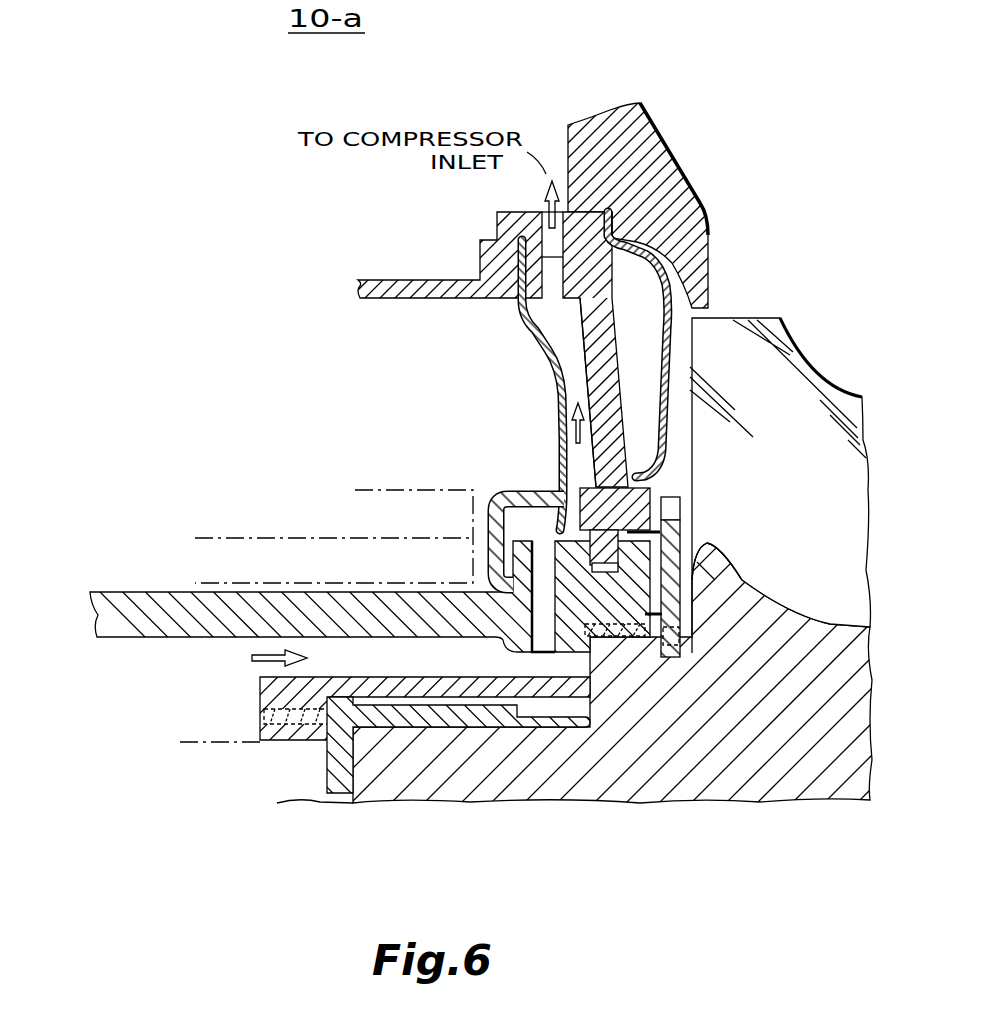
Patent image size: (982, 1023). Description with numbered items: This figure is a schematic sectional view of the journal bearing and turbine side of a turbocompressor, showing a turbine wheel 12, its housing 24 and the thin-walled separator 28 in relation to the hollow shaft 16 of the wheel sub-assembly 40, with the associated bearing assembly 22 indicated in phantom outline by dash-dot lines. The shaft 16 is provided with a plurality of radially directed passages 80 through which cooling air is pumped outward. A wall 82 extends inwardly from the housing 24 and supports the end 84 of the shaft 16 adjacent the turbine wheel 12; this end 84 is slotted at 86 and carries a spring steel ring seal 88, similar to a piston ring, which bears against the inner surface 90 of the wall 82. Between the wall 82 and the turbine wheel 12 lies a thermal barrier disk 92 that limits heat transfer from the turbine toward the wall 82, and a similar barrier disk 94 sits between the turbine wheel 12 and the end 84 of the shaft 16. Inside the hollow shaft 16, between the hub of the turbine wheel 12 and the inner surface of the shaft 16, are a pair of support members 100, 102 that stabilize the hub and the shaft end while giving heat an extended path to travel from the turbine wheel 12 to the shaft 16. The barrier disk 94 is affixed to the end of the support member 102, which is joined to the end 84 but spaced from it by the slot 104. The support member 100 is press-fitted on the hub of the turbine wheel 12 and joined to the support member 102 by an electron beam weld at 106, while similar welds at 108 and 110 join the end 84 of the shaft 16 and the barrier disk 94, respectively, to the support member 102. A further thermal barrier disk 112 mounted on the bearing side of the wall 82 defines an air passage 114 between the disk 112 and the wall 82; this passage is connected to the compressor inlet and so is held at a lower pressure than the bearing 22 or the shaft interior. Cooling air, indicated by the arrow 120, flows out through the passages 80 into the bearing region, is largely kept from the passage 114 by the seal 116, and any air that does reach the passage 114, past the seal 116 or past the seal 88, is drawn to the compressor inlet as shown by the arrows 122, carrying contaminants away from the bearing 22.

The turbine wheel 12 is at (785, 318).
The hollow shaft 16 is at (118, 590).
The bearing assembly 22 is at (357, 490).
The turbine housing 24 is at (663, 123).
The separator 28 is at (410, 280).
The sub-assembly 40 is at (735, 800).
The radially directed passages 80 is at (497, 497).
The wall 82 is at (612, 345).
The end of the shaft 84 is at (664, 614).
The slot 86 is at (700, 574).
The spring steel ring seal 88 is at (680, 553).
The inner surface 90 is at (688, 514).
The thermal barrier disk 92 is at (698, 296).
The barrier disk 94 is at (707, 557).
The support member 100 is at (328, 764).
The support member 102 is at (258, 684).
The slot 104 is at (672, 622).
The electron beam weld 106 is at (268, 714).
The weld 108 is at (633, 645).
The weld 110 is at (678, 633).
The thermal barrier disk 112 is at (551, 360).
The air passage 114 is at (553, 317).
The seal 116 is at (553, 527).
The cooling air arrow 120 is at (312, 658).
The air flow arrows 122 is at (565, 410).